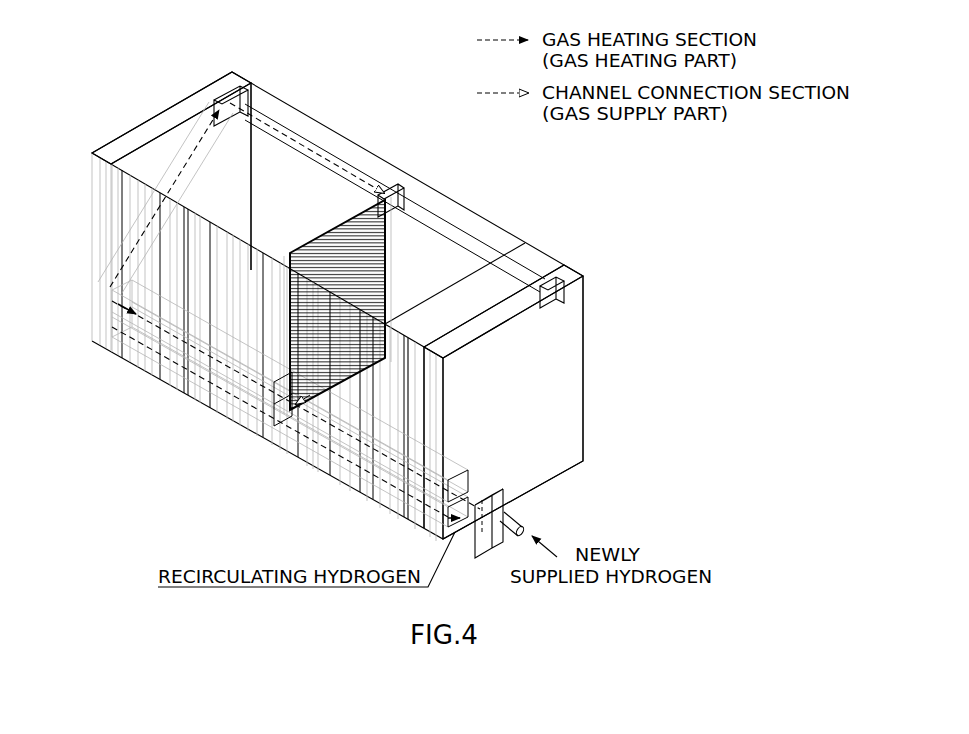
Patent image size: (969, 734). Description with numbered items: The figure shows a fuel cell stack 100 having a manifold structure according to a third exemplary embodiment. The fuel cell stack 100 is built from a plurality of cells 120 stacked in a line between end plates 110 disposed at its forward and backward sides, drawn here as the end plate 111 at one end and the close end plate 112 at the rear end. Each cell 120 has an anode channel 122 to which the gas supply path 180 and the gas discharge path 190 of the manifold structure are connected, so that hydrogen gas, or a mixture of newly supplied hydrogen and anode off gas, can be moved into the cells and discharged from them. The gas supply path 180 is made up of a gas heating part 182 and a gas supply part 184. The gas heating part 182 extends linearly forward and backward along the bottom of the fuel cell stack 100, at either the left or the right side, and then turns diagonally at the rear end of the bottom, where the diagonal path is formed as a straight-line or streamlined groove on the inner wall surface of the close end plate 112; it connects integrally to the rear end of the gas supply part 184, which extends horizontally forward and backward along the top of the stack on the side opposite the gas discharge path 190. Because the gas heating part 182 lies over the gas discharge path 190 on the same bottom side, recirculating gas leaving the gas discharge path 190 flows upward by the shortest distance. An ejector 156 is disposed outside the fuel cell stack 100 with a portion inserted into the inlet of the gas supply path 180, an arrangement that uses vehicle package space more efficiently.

The fuel cell stack 100 is at (143, 104).
The end plate 110 is at (387, 273).
The first end plate 111 is at (576, 275).
The close end plate 112 is at (237, 82).
The cell 120 is at (277, 350).
The anode channel 122 is at (313, 345).
The ejector 156 is at (507, 507).
The gas supply path 180 is at (361, 290).
The gas heating part 182 is at (400, 103).
The gas supply part 184 is at (342, 158).
The gas discharge path 190 is at (168, 357).